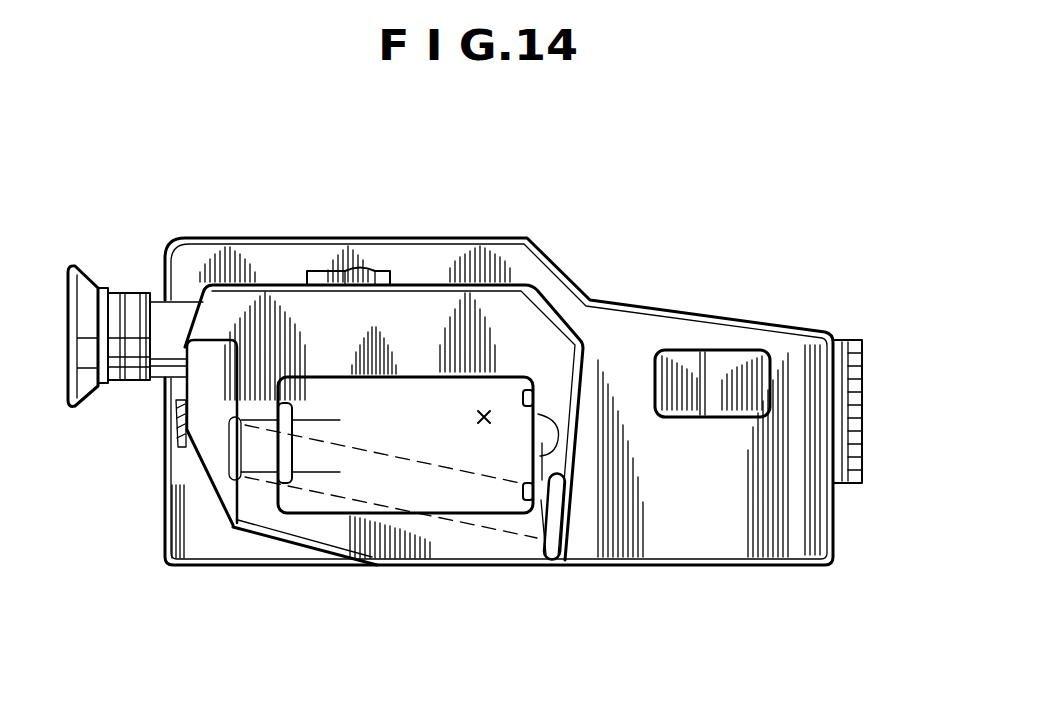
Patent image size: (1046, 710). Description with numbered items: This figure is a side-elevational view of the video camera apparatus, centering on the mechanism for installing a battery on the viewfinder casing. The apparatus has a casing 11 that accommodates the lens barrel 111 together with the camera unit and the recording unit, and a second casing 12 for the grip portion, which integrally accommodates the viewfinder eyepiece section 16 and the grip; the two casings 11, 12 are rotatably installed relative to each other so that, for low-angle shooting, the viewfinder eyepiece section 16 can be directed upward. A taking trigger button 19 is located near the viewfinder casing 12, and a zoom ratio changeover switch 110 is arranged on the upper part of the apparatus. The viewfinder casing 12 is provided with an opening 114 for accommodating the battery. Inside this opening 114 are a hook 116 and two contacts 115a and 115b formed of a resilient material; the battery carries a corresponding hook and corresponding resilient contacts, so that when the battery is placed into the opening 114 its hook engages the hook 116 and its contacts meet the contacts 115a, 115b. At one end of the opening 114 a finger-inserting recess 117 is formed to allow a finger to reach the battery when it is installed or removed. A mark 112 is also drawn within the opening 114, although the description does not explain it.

The casing 11 is at (703, 553).
The viewfinder casing 12 is at (522, 316).
The viewfinder eyepiece section 16 is at (90, 297).
The taking trigger button 19 is at (163, 423).
The zoom ratio changeover switch 110 is at (377, 268).
The lens barrel 111 is at (838, 357).
The reference mark 112 is at (487, 407).
The opening 114 is at (413, 377).
The contact 115a is at (533, 395).
The contact 115b is at (527, 486).
The hook 116 is at (293, 413).
The finger-inserting recess 117 is at (540, 558).